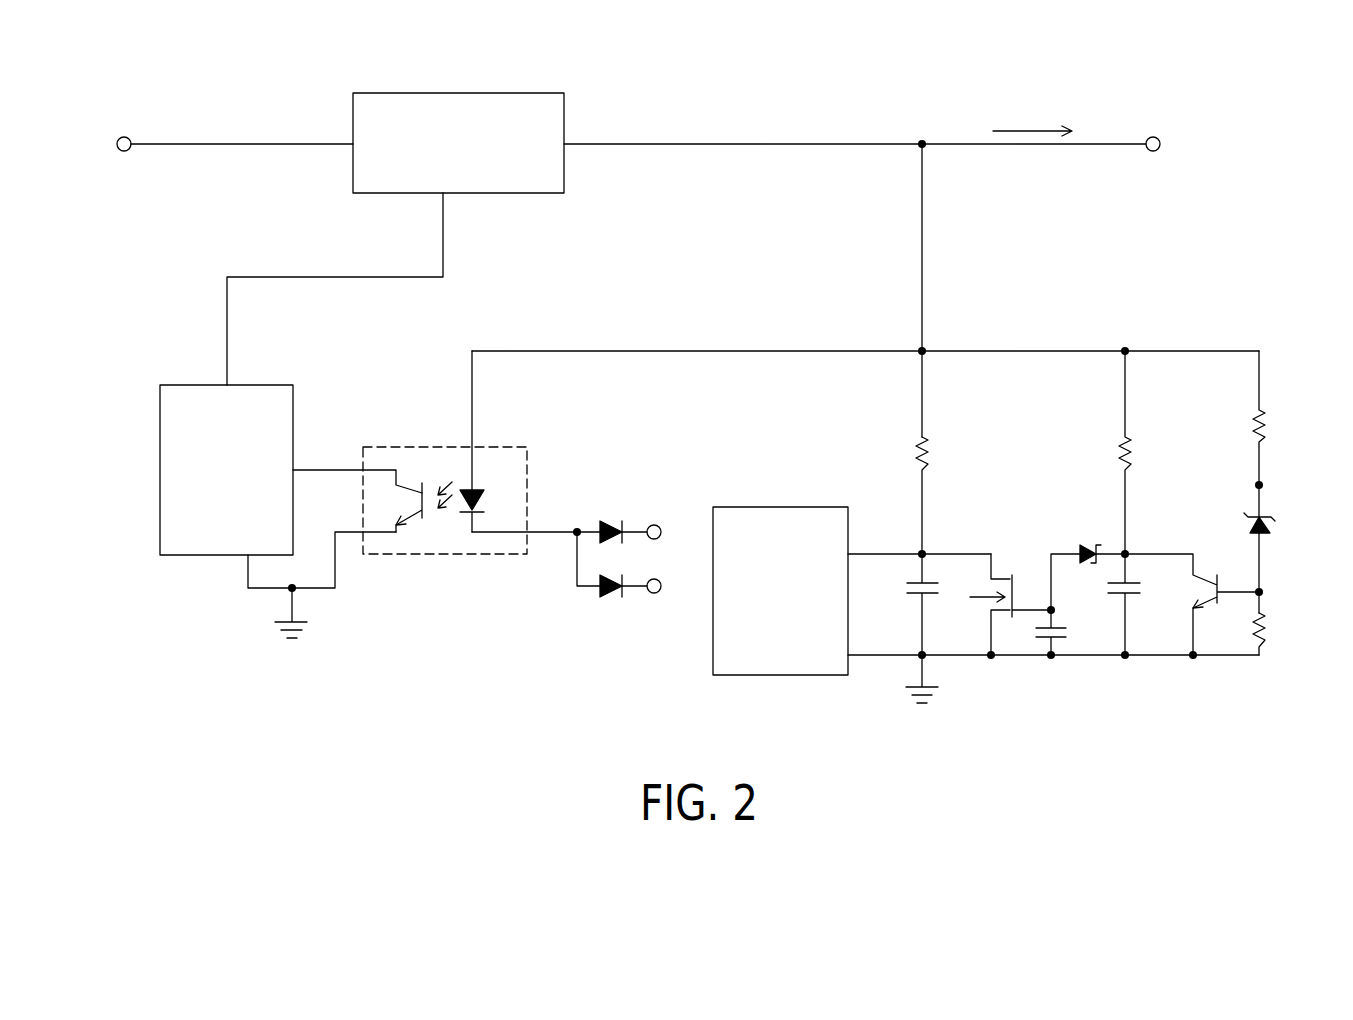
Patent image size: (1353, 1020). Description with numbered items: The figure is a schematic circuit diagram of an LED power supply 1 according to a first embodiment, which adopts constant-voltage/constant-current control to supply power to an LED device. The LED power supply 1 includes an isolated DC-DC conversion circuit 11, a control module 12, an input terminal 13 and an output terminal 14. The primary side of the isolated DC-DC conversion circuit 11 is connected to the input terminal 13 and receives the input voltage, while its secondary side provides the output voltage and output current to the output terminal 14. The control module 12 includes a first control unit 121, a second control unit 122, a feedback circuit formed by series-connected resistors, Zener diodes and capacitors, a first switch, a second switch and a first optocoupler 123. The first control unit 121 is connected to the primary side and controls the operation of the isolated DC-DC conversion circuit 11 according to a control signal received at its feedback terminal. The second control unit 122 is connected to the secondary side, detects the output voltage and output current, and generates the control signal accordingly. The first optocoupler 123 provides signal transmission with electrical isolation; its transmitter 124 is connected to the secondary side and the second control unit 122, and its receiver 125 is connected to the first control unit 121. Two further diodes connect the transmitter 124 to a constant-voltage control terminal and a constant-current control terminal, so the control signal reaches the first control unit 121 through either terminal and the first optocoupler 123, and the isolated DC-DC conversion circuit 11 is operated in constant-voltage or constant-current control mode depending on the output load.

The LED power supply 1 is at (1332, 107).
The isolated DC-DC conversion circuit 11 is at (443, 93).
The control module 12 is at (1103, 258).
The input terminal 13 is at (130, 137).
The output terminal 14 is at (1157, 137).
The first control unit 121 is at (160, 470).
The second control unit 122 is at (782, 675).
The first optocoupler 123 is at (450, 555).
The transmitter 124 is at (465, 490).
The receiver 125 is at (412, 487).